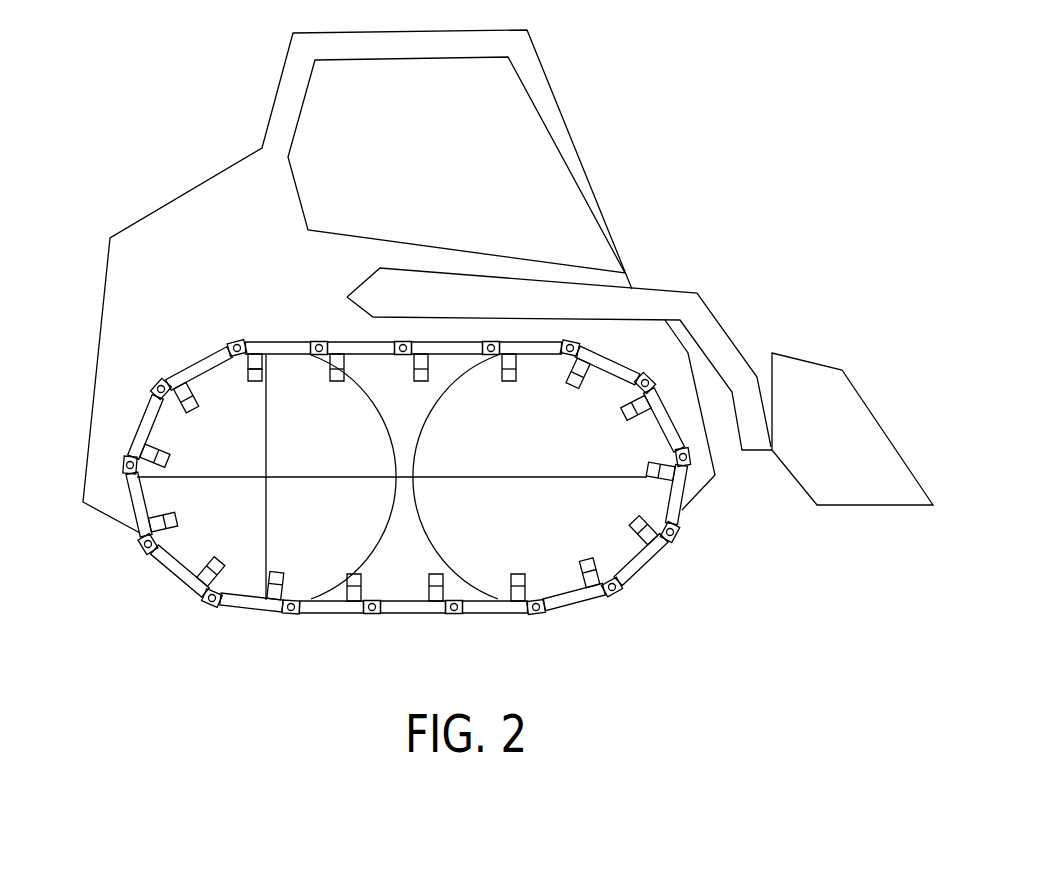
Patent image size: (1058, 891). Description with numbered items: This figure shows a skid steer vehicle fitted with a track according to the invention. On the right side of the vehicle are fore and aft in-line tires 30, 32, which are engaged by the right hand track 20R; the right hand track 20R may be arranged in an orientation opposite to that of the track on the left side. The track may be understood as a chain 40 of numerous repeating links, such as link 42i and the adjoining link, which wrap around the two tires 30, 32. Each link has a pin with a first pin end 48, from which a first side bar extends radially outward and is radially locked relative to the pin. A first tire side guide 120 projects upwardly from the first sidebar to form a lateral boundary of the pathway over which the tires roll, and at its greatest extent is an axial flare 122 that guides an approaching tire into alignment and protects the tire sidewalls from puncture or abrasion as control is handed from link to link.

The right hand track 20R is at (652, 565).
The fore in-line tire 30 is at (438, 477).
The aft in-line tire 32 is at (392, 477).
The chain 40 is at (140, 552).
The link 42i is at (200, 350).
The first pin end 48 is at (202, 299).
The first tire side guide 120 is at (253, 392).
The axial flare 122 is at (217, 407).